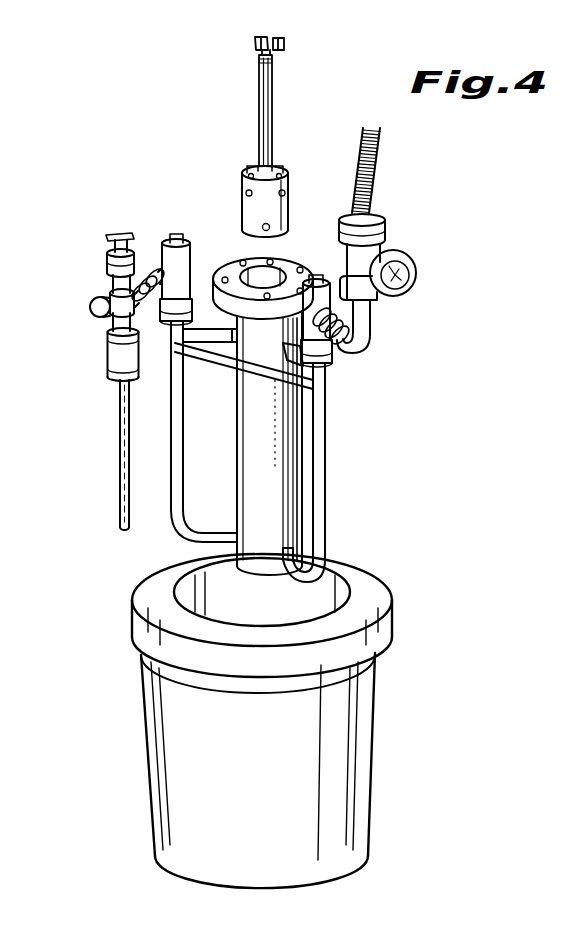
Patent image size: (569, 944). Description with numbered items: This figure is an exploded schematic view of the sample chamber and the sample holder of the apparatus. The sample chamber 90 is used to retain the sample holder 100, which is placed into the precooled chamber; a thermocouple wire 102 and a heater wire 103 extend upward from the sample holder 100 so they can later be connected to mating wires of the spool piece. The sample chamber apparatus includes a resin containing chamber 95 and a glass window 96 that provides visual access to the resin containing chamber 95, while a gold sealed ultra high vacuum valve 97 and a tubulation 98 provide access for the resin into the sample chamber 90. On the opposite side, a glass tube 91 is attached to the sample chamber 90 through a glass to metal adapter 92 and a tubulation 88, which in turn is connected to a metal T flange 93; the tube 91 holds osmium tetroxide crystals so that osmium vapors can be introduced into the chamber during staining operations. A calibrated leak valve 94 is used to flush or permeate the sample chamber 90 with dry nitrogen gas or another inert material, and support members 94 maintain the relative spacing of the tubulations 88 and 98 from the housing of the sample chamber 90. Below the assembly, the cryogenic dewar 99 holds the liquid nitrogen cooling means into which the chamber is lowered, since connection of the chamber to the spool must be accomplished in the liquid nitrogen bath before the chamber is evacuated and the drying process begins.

The tubulation 88 is at (171, 506).
The sample chamber 90 is at (271, 432).
The glass tube 91 is at (120, 425).
The glass to metal adapter 92 is at (107, 352).
The metal T flange 93 is at (110, 294).
The calibrated leak valve 94 is at (108, 254).
The resin containing chamber 95 is at (372, 250).
The glass window 96 is at (414, 285).
The gold sealed ultra high vacuum valve 97 is at (195, 320).
The tubulation 98 is at (330, 453).
The cryogenic dewar 99 is at (350, 775).
The sample holder 100 is at (293, 178).
The thermocouple wire 102 is at (257, 50).
The heater wire 103 is at (284, 42).